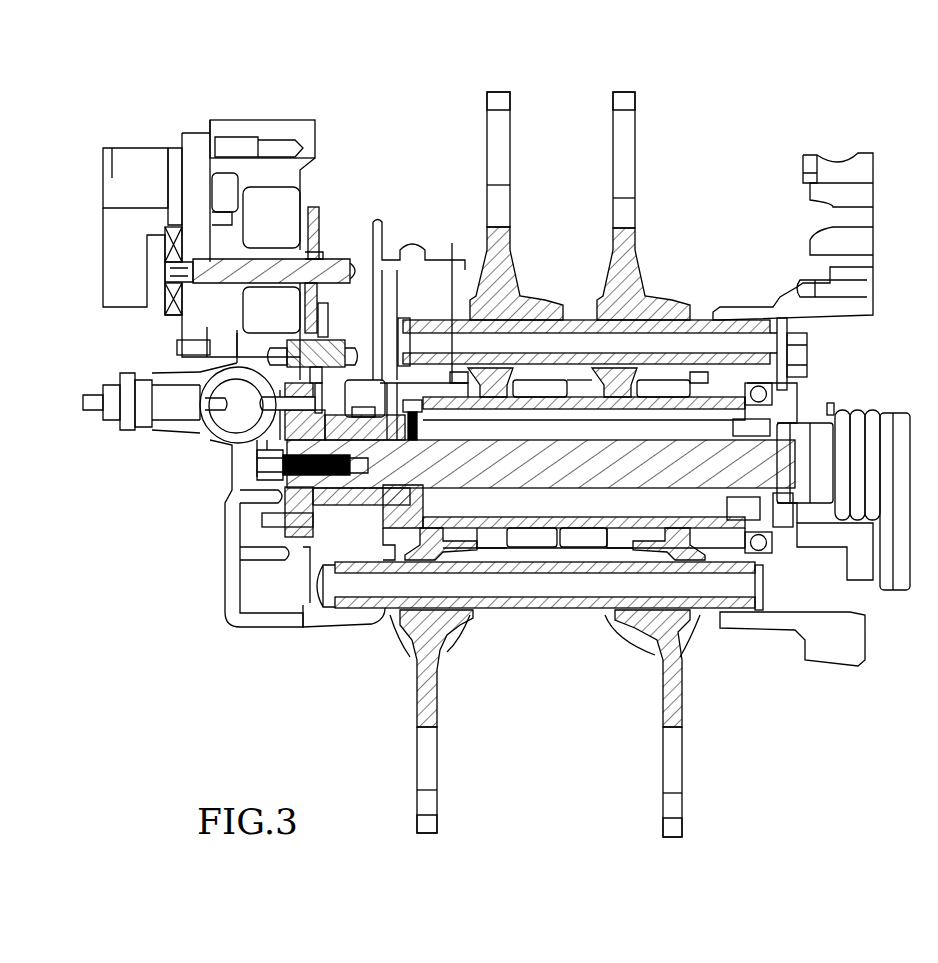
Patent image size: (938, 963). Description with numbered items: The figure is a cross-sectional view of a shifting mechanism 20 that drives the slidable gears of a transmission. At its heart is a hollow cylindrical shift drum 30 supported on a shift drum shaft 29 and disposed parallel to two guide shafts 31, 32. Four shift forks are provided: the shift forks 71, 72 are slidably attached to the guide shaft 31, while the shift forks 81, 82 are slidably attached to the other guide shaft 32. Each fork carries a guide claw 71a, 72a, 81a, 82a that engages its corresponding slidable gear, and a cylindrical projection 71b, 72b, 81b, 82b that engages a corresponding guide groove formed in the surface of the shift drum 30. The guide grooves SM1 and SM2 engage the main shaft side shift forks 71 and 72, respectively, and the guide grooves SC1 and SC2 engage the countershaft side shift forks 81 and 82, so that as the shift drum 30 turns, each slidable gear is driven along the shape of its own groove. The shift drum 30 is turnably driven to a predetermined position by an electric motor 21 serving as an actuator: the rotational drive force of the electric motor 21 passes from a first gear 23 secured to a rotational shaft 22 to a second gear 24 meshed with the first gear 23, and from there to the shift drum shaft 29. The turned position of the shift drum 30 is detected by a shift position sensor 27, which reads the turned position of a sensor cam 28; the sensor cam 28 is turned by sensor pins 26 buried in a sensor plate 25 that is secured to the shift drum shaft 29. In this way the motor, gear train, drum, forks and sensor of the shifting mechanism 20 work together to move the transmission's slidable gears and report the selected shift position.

The shifting mechanism 20 is at (397, 95).
The electric motor 21 is at (125, 250).
The rotational shaft 22 is at (270, 262).
The first gear 23 is at (320, 222).
The second gear 24 is at (343, 372).
The sensor plate 25 is at (267, 512).
The sensor pins 26 is at (237, 363).
The shift position sensor 27 is at (148, 437).
The sensor cam 28 is at (233, 420).
The shift drum shaft 29 is at (580, 486).
The shift drum 30 is at (555, 525).
The guide shaft 31 is at (580, 325).
The guide shaft 32 is at (400, 613).
The shift fork 71 is at (510, 158).
The guide claw 71a is at (497, 105).
The cylindrical projection 71b is at (495, 395).
The shift fork 72 is at (638, 158).
The guide claw 72a is at (623, 105).
The cylindrical projection 72b is at (615, 395).
The shift fork 81 is at (438, 752).
The guide claw 81a is at (428, 820).
The cylindrical projection 81b is at (432, 527).
The shift fork 82 is at (683, 750).
The guide claw 82a is at (675, 822).
The cylindrical projection 82b is at (683, 527).
The guide groove SC1 is at (452, 385).
The guide groove SC2 is at (693, 385).
The guide groove SM1 is at (488, 535).
The guide groove SM2 is at (617, 535).